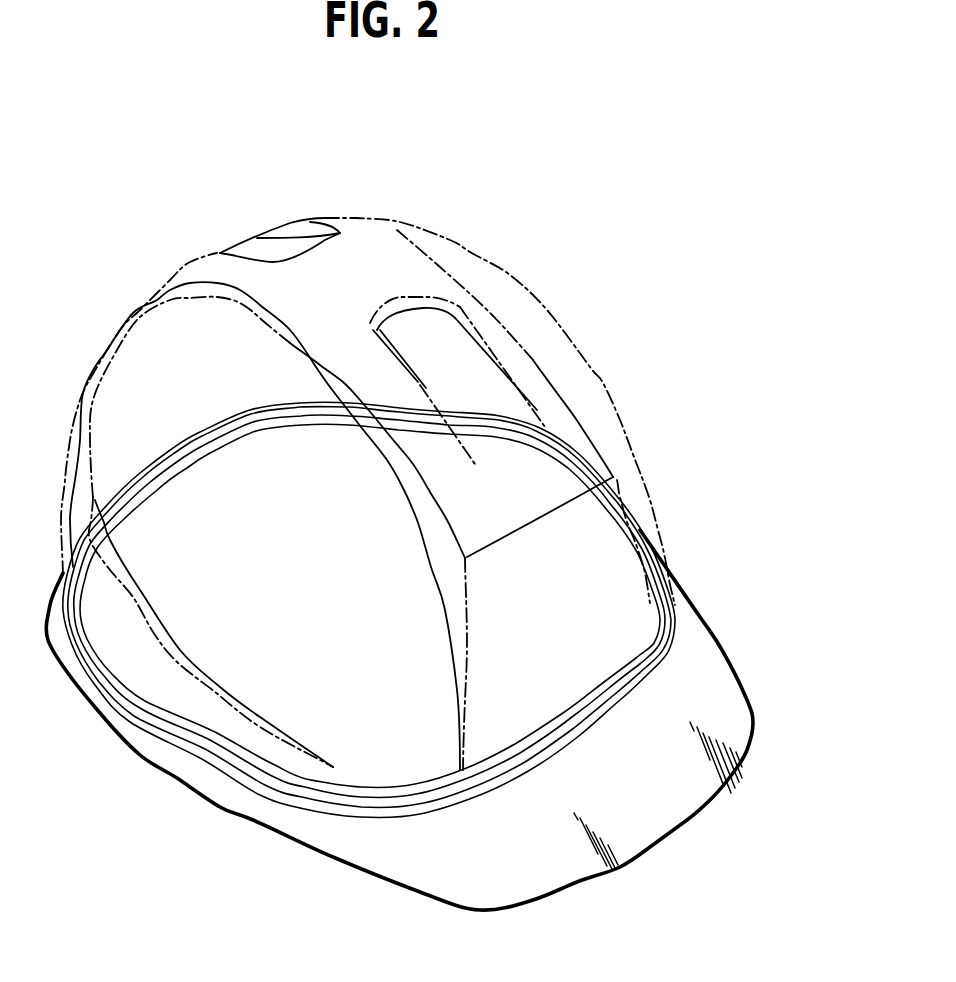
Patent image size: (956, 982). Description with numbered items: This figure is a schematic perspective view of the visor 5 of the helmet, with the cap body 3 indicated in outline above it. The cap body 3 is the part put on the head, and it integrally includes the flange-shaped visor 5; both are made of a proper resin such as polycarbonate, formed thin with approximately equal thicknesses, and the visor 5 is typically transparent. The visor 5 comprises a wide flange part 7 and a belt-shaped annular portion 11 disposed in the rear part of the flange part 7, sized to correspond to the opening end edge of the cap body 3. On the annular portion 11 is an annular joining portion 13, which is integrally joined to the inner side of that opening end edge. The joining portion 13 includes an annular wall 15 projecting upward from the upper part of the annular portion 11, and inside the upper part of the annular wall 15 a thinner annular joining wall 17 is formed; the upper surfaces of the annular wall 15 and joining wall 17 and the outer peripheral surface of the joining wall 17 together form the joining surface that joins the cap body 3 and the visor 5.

The cap body 3 is at (603, 383).
The visor 5 is at (748, 690).
The flange part 7 is at (548, 860).
The annular portion 11 is at (177, 765).
The joining portion 13 is at (185, 717).
The annular wall 15 is at (333, 812).
The joining wall 17 is at (381, 783).